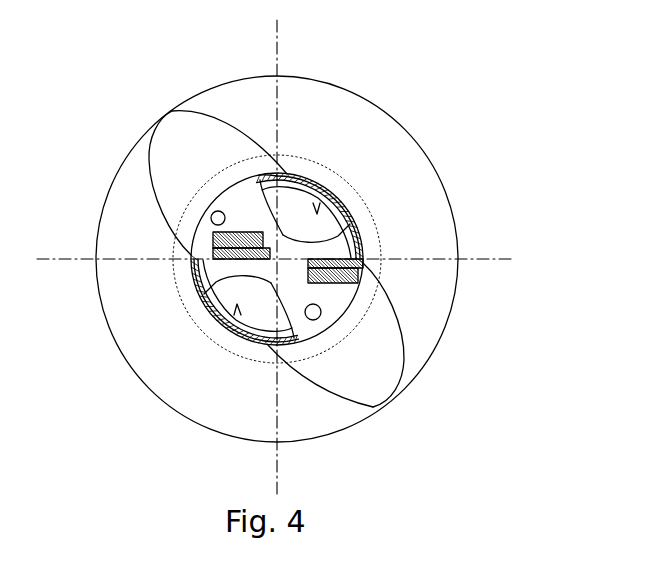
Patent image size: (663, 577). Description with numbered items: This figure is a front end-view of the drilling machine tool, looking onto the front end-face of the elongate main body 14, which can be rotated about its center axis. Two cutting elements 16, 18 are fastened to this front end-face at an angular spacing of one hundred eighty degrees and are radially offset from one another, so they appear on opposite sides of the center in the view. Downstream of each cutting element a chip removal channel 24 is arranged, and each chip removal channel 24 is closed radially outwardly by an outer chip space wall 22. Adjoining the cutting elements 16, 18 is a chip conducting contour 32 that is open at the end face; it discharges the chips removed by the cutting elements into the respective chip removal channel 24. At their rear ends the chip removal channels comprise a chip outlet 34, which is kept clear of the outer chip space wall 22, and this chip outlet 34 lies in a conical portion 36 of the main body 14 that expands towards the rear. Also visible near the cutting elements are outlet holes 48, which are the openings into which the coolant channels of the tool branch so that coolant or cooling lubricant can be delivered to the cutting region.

The main body 14 is at (403, 128).
The cutting element 16 is at (213, 263).
The cutting element 18 is at (350, 243).
The outer chip space wall 22 is at (317, 212).
The chip removal channel 24 is at (317, 212).
The chip conducting contour 32 is at (283, 233).
The chip outlet 34 is at (197, 140).
The conical portion 36 is at (433, 282).
The outlet hole 48 is at (216, 211).